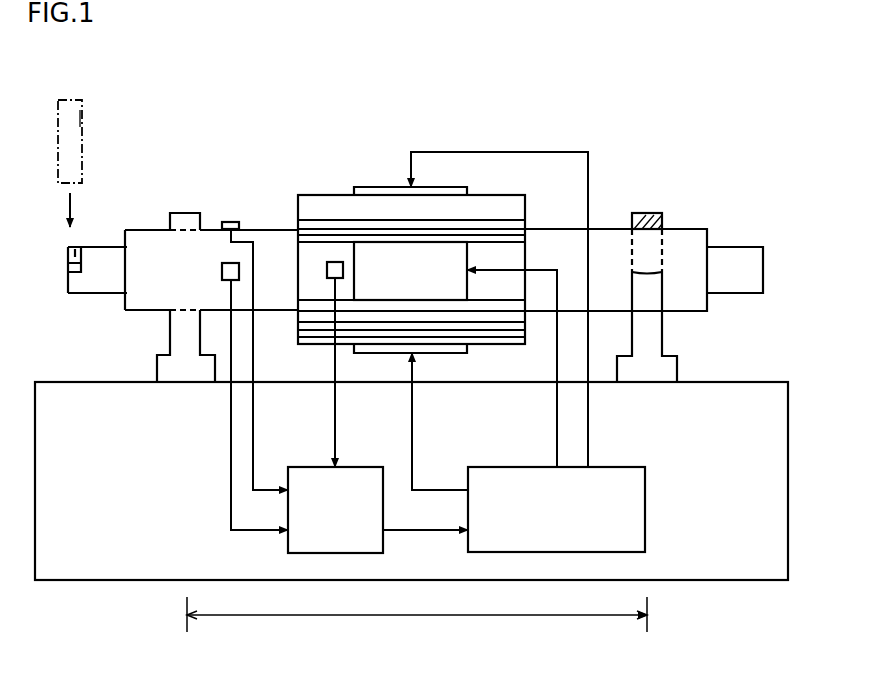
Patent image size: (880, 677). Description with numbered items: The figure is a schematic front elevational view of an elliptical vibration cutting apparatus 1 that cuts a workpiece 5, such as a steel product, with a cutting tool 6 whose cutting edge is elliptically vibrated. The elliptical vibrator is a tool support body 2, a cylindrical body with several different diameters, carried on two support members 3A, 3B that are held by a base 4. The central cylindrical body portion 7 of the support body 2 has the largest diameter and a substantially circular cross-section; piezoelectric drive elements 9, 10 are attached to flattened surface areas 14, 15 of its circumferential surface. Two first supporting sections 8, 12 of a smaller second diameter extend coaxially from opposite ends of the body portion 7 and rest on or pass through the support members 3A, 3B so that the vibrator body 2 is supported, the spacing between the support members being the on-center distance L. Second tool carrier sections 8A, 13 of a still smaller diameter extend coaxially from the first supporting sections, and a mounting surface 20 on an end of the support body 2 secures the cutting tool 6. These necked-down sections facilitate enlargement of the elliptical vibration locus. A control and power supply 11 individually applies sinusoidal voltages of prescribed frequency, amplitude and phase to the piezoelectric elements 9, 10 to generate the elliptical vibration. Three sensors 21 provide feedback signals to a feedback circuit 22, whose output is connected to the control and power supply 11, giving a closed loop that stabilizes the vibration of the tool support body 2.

The elliptical vibration cutting apparatus 1 is at (590, 88).
The tool support body 2 is at (532, 220).
The support member 3A is at (182, 335).
The support member 3B is at (650, 332).
The base 4 is at (58, 397).
The workpiece 5 is at (86, 117).
The cutting tool 6 is at (73, 275).
The central cylindrical body portion 7 is at (318, 213).
The first supporting section 8 is at (275, 248).
The second tool carrier section 8A is at (103, 273).
The piezoelectric drive element 9 is at (382, 188).
The piezoelectric drive element 10 is at (400, 283).
The control and power supply 11 is at (544, 522).
The first supporting section 12 is at (682, 257).
The second tool carrier section 13 is at (735, 262).
The flattened surface area 14 is at (340, 193).
The flattened surface area 15 is at (505, 285).
The mounting surface 20 is at (75, 250).
The sensor 21 is at (222, 272).
The feedback circuit 22 is at (324, 524).